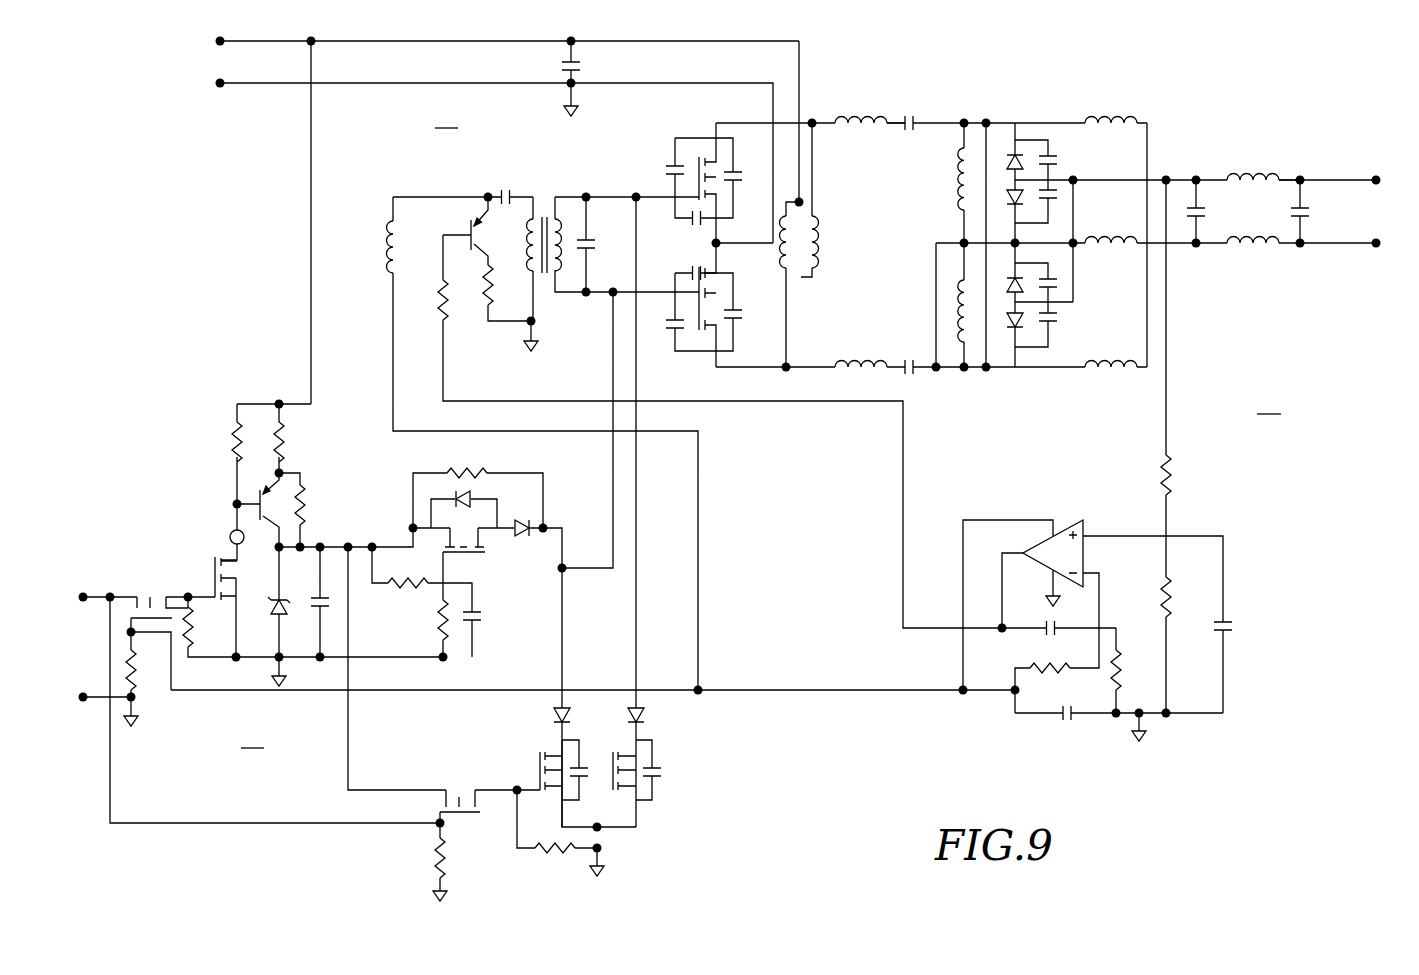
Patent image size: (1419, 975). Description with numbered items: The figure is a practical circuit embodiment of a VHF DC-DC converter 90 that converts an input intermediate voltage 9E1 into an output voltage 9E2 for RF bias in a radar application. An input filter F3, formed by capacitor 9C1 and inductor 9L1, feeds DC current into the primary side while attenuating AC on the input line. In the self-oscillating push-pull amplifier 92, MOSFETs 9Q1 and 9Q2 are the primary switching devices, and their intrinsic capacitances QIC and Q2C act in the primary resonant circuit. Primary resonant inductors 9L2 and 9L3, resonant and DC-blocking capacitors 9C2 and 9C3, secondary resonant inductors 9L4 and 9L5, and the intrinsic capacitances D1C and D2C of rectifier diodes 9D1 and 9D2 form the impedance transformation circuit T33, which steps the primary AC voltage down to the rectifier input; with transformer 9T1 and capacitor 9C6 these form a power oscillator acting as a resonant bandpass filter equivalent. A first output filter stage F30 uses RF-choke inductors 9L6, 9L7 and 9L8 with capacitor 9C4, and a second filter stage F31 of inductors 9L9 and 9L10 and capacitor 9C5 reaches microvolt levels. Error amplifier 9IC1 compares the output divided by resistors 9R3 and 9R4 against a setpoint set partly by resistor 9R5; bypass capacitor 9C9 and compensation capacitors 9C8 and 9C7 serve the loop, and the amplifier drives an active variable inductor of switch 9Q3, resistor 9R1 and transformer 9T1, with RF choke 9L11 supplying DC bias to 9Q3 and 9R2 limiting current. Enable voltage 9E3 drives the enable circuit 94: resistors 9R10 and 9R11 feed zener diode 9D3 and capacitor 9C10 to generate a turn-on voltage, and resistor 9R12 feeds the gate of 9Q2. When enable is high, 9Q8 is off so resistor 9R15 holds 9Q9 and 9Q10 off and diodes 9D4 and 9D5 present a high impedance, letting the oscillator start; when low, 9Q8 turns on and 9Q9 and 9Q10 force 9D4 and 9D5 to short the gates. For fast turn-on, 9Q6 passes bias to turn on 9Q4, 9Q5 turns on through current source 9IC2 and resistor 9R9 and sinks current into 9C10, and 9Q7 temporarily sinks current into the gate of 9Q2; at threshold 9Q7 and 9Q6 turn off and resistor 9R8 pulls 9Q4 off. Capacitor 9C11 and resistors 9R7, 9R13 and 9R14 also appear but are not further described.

The input intermediate voltage 9E1 is at (207, 62).
The capacitor 9C1 is at (590, 68).
The input filter F3 is at (801, 61).
The self-oscillating push-pull amplifier 92 is at (446, 119).
The capacitor 9C11 is at (509, 185).
The transformer 9T1 is at (544, 227).
The RF choke 9L11 is at (374, 235).
The switch 9Q3 is at (484, 231).
The resistor 9R1 is at (507, 293).
The current limiting impedance 9R2 is at (429, 277).
The capacitor 9C6 is at (601, 244).
The primary switching device 9Q1 is at (735, 183).
The intrinsic capacitance Q2C is at (667, 165).
The primary switching device 9Q2 is at (734, 305).
The intrinsic capacitance QIC is at (672, 320).
The filter inductor 9L1 is at (813, 245).
The primary resonant inductor 9L2 is at (861, 106).
The impedance transformation circuit T33 is at (887, 110).
The resonant capacitor 9C2 is at (910, 137).
The secondary resonant inductor 9L4 is at (943, 179).
The secondary resonant inductor 9L5 is at (951, 304).
The primary resonant inductor 9L3 is at (861, 350).
The resonant capacitor 9C3 is at (910, 354).
The intrinsic capacitance D1C is at (1055, 156).
The rectifier diode 9D1 is at (1052, 183).
The intrinsic capacitance D2C is at (1055, 330).
The rectifier diode 9D2 is at (1052, 305).
The inductor 9L6 is at (1111, 106).
The first output filter stage F30 is at (1150, 133).
The inductor 9L7 is at (1111, 226).
The inductor 9L8 is at (1111, 350).
The inductor 9L9 is at (1253, 163).
The second filter stage F31 is at (1278, 172).
The capacitor 9C4 is at (1212, 211).
The inductor 9L10 is at (1253, 254).
The capacitor 9C5 is at (1316, 211).
The output voltage 9E2 is at (1370, 212).
The VHF converter 90 is at (1269, 405).
The resistor 9R3 is at (1184, 475).
The resistor 9R4 is at (1184, 597).
The error amplifier 9IC1 is at (1055, 539).
The capacitor 9C7 is at (1240, 627).
The capacitor 9C8 is at (1064, 638).
The divider resistor 9R5 is at (1133, 670).
The resistor 9R8 is at (626, 652).
The bypass capacitor 9C9 is at (1068, 727).
The enable signal voltage 9E3 is at (79, 647).
The transistor 9Q6 is at (159, 602).
The transistor 9Q4 is at (209, 607).
The resistor 9R7 is at (148, 670).
The zener diode 9D3 is at (268, 620).
The capacitor 9C10 is at (306, 589).
The current source 9IC2 is at (219, 532).
The resistor 9R9 is at (221, 442).
The resistor 9R10 is at (302, 442).
The transistor 9Q5 is at (258, 506).
The resistor 9R11 is at (322, 494).
The resistor 9R12 is at (467, 463).
The transistor 9Q7 is at (486, 534).
The resistor 9R14 is at (409, 573).
The resistor 9R13 is at (440, 620).
The enable circuit 94 is at (252, 739).
The diode 9D4 is at (544, 717).
The diode 9D5 is at (618, 717).
The transistor 9Q8 is at (478, 790).
The transistor 9Q9 is at (548, 783).
The transistor 9Q10 is at (648, 784).
The resistor 9R15 is at (506, 859).